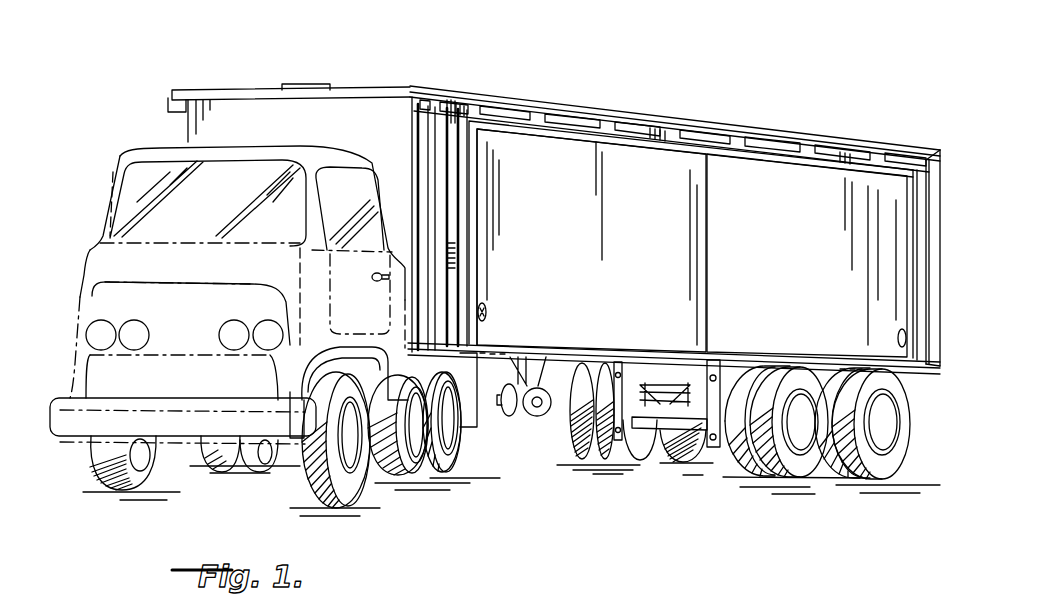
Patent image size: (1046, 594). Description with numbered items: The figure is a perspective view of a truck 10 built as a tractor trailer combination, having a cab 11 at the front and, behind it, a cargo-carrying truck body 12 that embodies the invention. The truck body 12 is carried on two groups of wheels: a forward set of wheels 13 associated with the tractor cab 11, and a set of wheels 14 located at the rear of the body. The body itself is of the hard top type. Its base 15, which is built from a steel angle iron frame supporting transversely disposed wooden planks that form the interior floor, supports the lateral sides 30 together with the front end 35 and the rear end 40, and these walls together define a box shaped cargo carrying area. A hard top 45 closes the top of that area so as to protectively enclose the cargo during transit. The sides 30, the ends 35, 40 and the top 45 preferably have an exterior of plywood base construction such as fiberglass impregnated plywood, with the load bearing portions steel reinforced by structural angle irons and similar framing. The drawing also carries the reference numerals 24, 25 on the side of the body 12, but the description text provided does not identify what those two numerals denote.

The truck 10 is at (362, 58).
The cab 11 is at (112, 149).
The cargo-carrying truck body 12 is at (792, 148).
The forward set of wheels 13 is at (452, 457).
The set of wheels 14 is at (884, 466).
The base 15 is at (488, 374).
The rear sliding door 24 is at (800, 286).
The front sliding door 25 is at (562, 258).
The lateral sides 30 is at (573, 163).
The front end 35 is at (268, 127).
The rear end 40 is at (950, 164).
The hard top 45 is at (418, 84).